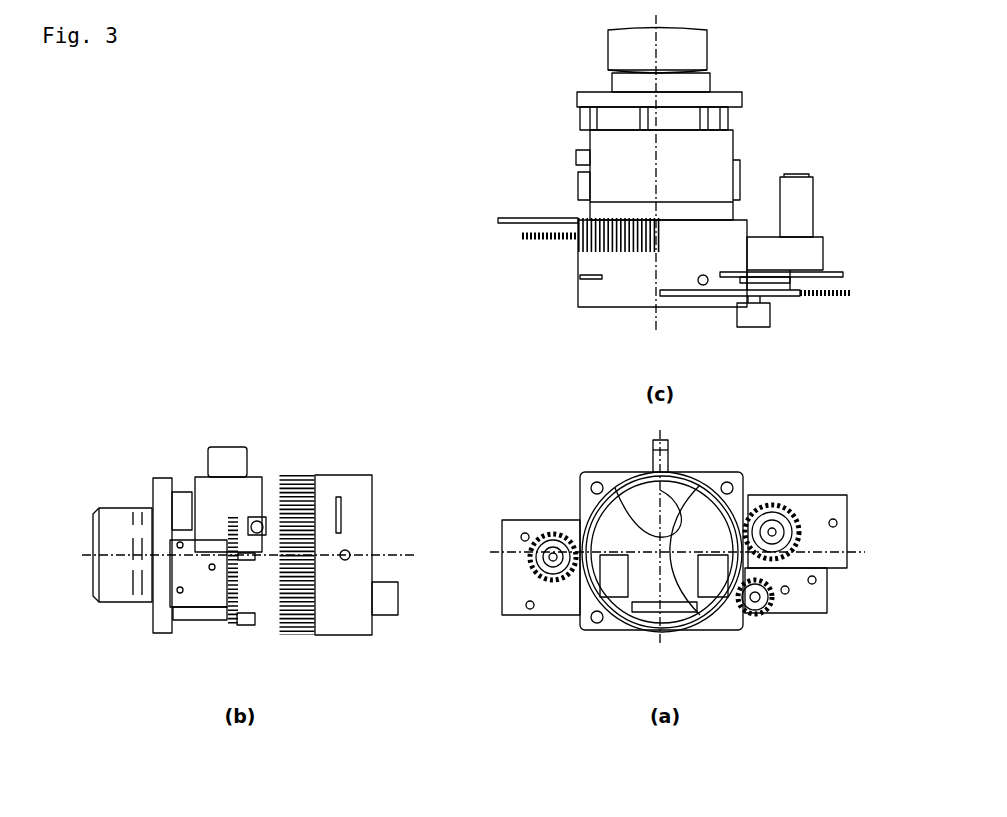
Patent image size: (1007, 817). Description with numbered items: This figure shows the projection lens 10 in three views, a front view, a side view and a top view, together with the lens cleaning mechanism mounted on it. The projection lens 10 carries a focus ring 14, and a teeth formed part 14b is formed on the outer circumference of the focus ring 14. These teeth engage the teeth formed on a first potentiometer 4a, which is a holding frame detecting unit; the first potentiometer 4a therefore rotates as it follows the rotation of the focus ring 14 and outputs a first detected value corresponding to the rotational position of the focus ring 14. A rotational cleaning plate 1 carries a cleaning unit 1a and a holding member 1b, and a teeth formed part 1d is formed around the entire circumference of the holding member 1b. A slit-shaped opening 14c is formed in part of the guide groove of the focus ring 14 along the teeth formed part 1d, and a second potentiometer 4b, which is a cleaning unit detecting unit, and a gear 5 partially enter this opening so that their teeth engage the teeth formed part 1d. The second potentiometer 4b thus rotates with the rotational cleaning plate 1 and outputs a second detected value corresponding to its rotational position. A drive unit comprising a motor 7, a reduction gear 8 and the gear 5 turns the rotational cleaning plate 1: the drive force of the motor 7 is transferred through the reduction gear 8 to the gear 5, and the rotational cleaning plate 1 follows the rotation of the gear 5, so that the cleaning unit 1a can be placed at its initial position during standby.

The projection lens 10 is at (540, 452).
The rotational cleaning plate 1 is at (742, 515).
The cleaning unit 1a is at (690, 510).
The holding member 1b is at (640, 508).
The teeth formed part 1d is at (725, 272).
The first potentiometer 4a is at (540, 242).
The second potentiometer 4b is at (772, 296).
The gear 5 is at (755, 326).
The motor 7 is at (797, 205).
The reduction gear 8 is at (808, 600).
The focus ring 14 is at (318, 505).
The teeth formed part 14b is at (297, 480).
The slit-shaped opening 14c is at (708, 278).